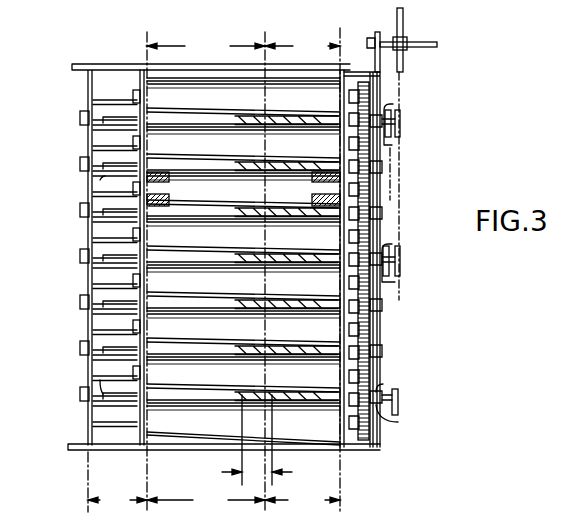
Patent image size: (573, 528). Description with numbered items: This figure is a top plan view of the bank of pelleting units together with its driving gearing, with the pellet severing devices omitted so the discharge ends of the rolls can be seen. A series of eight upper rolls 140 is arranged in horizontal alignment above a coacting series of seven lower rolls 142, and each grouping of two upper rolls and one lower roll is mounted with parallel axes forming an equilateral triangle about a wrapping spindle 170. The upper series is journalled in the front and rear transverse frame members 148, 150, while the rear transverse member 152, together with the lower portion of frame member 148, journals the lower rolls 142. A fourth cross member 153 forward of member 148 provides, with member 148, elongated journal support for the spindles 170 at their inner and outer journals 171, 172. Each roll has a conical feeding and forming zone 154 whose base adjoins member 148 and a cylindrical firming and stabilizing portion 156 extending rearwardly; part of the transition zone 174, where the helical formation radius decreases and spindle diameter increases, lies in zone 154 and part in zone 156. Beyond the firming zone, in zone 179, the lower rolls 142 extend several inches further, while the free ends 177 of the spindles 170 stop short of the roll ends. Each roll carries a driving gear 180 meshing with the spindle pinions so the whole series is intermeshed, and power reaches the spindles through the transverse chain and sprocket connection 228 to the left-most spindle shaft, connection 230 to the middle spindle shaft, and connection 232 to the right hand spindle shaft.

The upper rolls 140 is at (243, 261).
The lower rolls 142 is at (95, 342).
The front transverse frame member 148 is at (380, 233).
The rear transverse frame member 150 is at (90, 228).
The rear transverse member 152 is at (88, 101).
The fourth cross member 153 is at (375, 162).
The feeding and forming zone 154 is at (302, 270).
The firming and stabilizing portion 156 is at (206, 272).
The wrapping spindles 170 is at (100, 180).
The inner journal 171 is at (388, 192).
The outer journal 172 is at (392, 143).
The axially extending zone 174 is at (257, 440).
The free ends of spindles 177 is at (107, 172).
The zone beyond firming zone 179 is at (117, 482).
The roll driving gears 180 is at (373, 443).
The transverse chain and sprocket connection 228 is at (402, 85).
The chain connection to middle spindle shaft 230 is at (393, 163).
The chain connection to right hand spindle shaft 232 is at (401, 285).